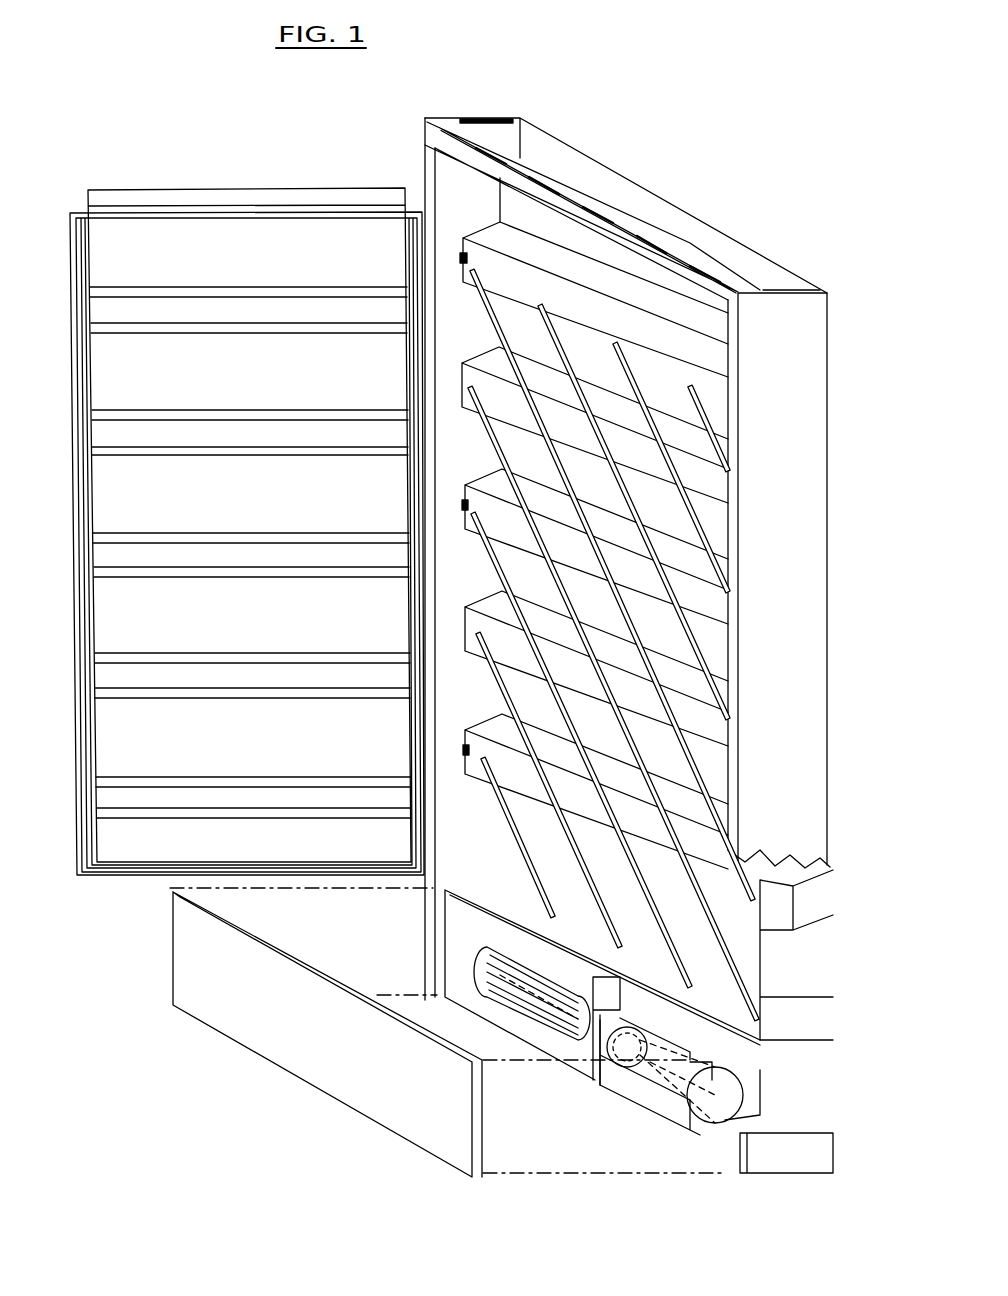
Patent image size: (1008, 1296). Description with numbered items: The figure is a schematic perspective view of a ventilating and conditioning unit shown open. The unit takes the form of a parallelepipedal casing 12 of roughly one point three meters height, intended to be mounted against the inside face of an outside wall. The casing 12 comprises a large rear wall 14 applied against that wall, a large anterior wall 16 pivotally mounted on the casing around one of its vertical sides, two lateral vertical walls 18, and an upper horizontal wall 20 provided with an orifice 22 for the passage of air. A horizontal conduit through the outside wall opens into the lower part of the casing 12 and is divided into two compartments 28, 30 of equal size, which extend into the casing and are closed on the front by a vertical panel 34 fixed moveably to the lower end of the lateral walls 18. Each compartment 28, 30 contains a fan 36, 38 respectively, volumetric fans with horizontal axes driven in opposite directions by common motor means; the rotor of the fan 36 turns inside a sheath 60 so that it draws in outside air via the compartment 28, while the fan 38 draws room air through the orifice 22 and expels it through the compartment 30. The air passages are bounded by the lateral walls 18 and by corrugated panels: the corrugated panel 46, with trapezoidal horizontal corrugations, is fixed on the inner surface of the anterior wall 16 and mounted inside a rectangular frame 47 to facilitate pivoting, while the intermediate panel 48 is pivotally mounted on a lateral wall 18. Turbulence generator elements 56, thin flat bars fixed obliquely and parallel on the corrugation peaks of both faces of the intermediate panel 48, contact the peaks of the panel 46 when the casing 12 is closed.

The casing 12 is at (855, 480).
The rear wall 14 is at (835, 800).
The anterior wall 16 is at (73, 748).
The lateral vertical walls 18 is at (446, 186).
The upper horizontal wall 20 is at (648, 233).
The orifice 22 is at (573, 173).
The compartment 28 is at (770, 1096).
The compartment 30 is at (520, 950).
The vertical panel 34 is at (258, 1020).
The fan 36 is at (660, 1092).
The fan 38 is at (500, 946).
The corrugated panel 46 is at (157, 240).
The rectangular frame 47 is at (406, 262).
The intermediate panel 48 is at (683, 350).
The turbulence generator elements 56 is at (720, 573).
The sheath 60 is at (628, 1098).